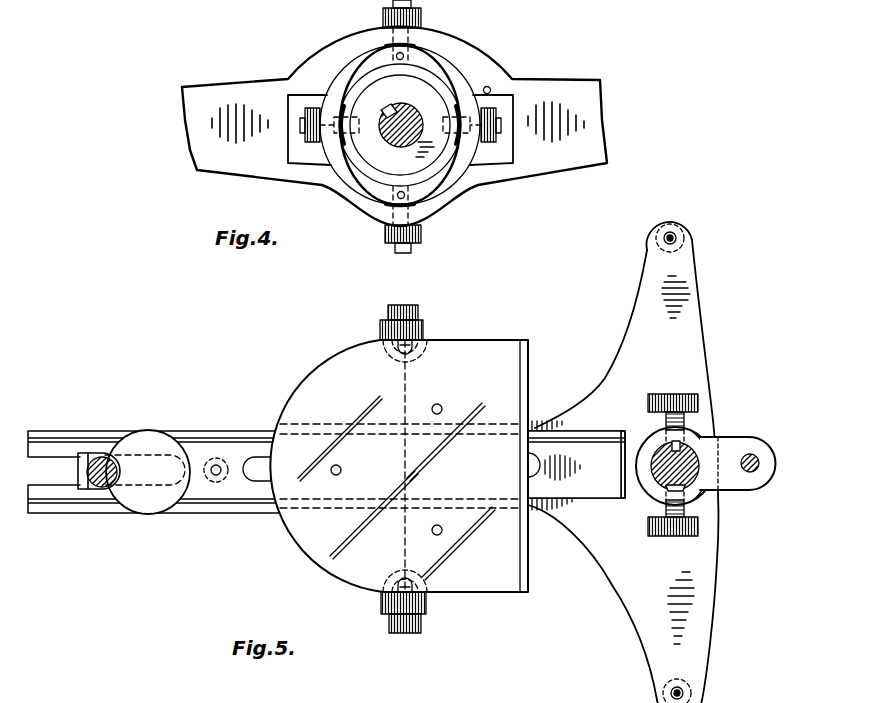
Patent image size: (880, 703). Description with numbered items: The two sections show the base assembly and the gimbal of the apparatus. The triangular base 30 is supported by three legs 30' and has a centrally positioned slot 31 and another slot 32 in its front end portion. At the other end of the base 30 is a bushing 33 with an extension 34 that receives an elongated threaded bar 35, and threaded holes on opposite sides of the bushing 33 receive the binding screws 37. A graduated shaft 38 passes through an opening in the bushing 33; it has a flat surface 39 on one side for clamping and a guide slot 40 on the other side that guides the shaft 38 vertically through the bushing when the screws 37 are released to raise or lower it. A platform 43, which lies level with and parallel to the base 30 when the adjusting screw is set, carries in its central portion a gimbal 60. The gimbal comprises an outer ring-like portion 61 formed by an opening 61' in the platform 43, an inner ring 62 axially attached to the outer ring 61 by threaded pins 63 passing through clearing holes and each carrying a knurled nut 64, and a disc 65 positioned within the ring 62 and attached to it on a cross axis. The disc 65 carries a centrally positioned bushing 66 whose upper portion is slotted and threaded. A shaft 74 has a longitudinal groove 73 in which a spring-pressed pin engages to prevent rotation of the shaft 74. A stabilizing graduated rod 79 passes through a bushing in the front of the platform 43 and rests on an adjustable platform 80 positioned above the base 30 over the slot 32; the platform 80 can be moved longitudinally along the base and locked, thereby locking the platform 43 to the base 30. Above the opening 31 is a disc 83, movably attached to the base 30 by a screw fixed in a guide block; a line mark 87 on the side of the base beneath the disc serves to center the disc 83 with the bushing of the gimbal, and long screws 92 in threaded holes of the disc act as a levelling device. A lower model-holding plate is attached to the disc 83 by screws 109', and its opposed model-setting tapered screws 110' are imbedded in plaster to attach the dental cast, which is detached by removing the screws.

In FIG. 5, the triangular base 30 is at (395, 462).
In FIG. 5, the legs 30' is at (470, 463).
In FIG. 5, the centrally positioned slot 31 is at (263, 455).
In FIG. 5, the slot 32 is at (53, 462).
In FIG. 5, the bushing 33 is at (704, 486).
In FIG. 5, the extension 34 is at (768, 452).
In FIG. 5, the elongated threaded bar 35 is at (761, 464).
In FIG. 5, the screws 37 is at (674, 394).
In FIG. 5, the graduated shaft 38 is at (708, 445).
In FIG. 5, the flat surface 39 is at (660, 482).
In FIG. 5, the guide slot 40 is at (682, 445).
In FIG. 4, the platform 43 is at (562, 83).
In FIG. 4, the gimbal 60 is at (440, 70).
In FIG. 4, the outer ring-like portion 61 is at (428, 126).
In FIG. 4, the lug 61' is at (510, 68).
In FIG. 4, the inner ring 62 is at (440, 178).
In FIG. 4, the threaded pins 63 is at (411, 4).
In FIG. 4, the knurled nut 64 is at (383, 17).
In FIG. 4, the disc 65 is at (352, 137).
In FIG. 4, the bushing 66 is at (403, 104).
In FIG. 4, the longitudinal groove 73 is at (401, 148).
In FIG. 4, the shaft 74 is at (385, 112).
In FIG. 5, the stabilizing graduated rod 79 is at (99, 458).
In FIG. 5, the adjustable platform 80 is at (128, 500).
In FIG. 5, the disc 83 is at (505, 380).
In FIG. 5, the line mark 87 is at (406, 490).
In FIG. 5, the long screw 92 is at (443, 408).
In FIG. 5, the screws 109' is at (442, 466).
In FIG. 5, the model-setting tapered screws 110' is at (429, 483).